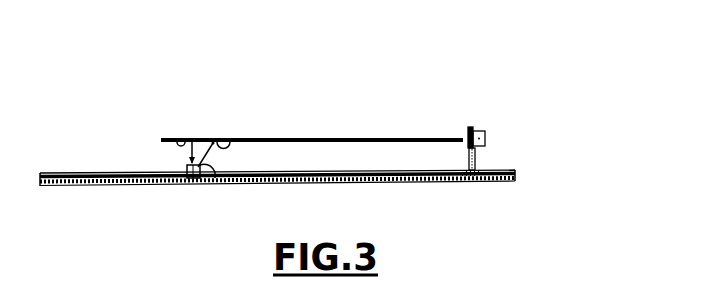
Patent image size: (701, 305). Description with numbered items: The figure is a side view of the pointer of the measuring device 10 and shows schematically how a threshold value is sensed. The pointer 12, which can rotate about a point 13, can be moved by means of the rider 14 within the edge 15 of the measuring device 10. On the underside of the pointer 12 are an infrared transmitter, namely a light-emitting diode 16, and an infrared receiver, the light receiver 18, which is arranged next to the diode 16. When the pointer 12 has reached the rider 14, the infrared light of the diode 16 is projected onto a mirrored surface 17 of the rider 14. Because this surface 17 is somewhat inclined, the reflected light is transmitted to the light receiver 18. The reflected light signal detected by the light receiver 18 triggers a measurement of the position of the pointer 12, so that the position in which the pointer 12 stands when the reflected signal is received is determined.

The measuring device 10 is at (413, 93).
The pointer 12 is at (322, 137).
The point 13 is at (471, 127).
The rider 14 is at (188, 184).
The edge 15 is at (517, 172).
The light-emitting diode 16 is at (181, 138).
The mirrored surface 17 is at (212, 178).
The light receiver 18 is at (237, 138).